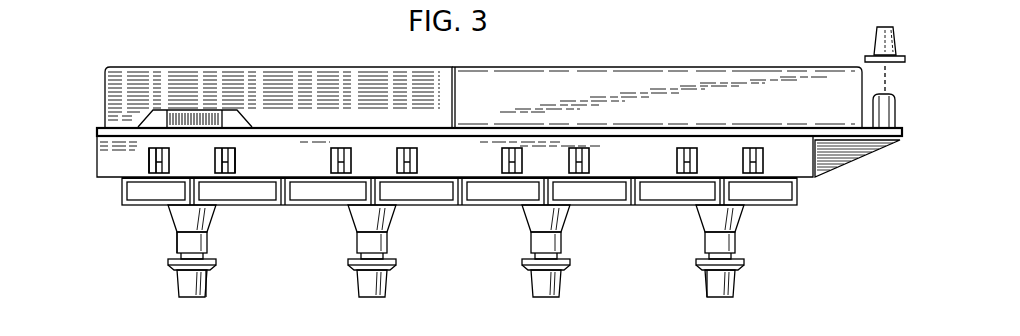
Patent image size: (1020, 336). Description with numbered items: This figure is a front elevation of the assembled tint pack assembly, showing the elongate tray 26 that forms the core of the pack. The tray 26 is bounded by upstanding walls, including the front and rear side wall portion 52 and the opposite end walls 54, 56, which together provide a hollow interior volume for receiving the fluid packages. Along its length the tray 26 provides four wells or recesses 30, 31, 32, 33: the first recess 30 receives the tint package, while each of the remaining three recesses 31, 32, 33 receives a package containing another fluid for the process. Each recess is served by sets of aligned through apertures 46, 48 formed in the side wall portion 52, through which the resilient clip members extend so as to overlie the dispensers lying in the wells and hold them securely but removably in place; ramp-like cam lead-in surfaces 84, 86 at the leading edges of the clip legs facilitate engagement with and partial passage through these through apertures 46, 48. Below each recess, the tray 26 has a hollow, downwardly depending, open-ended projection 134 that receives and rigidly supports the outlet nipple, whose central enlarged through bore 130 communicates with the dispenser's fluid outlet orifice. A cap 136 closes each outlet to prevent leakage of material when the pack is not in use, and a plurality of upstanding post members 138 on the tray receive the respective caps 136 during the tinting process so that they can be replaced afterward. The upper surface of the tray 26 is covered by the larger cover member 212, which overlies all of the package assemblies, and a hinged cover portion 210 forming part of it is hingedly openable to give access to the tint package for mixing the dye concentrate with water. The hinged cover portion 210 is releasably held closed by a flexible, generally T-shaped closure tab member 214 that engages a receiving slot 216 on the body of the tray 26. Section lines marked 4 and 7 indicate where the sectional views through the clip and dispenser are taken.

The section line 4- 4 is at (56, 197).
The section line 7- 7 is at (195, 13).
The tray 26 is at (826, 176).
The recess 30 is at (216, 224).
The recess 31 is at (569, 220).
The recess 32 is at (390, 228).
The recess 33 is at (744, 223).
The through aperture 46 is at (216, 178).
The through aperture 48 is at (163, 172).
The side wall portion 52 is at (460, 168).
The end wall 54 is at (97, 152).
The end wall 56 is at (832, 163).
The cam lead-in surface 84 is at (151, 160).
The cam lead-in surface 86 is at (236, 162).
The through bore 130 is at (745, 280).
The projection 134 is at (173, 224).
The cap 136 is at (876, 40).
The post member 138 is at (893, 115).
The hinged cover portion 210 is at (382, 113).
The cover member 212 is at (636, 113).
The closure tab member 214 is at (220, 110).
The receiving slot 216 is at (165, 112).